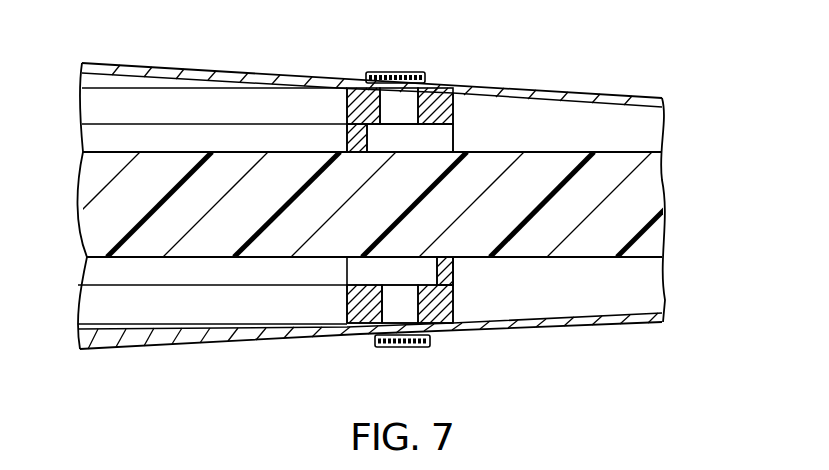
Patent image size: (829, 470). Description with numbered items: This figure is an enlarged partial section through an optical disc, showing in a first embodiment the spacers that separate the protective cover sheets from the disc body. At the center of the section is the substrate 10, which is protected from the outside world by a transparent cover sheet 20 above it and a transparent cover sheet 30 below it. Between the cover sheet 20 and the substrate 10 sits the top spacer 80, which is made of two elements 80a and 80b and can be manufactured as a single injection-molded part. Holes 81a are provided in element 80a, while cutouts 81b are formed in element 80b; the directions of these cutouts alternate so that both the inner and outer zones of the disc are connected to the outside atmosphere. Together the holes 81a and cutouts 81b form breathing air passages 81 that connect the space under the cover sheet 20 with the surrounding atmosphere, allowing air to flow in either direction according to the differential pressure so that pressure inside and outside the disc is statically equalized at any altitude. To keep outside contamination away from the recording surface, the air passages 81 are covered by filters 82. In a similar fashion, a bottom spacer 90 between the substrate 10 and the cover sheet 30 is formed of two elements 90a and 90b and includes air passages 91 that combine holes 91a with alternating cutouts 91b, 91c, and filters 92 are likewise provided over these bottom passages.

The substrate 10 is at (650, 203).
The cover sheet 20 is at (605, 93).
The cover sheet 30 is at (562, 328).
The top spacer 80 is at (470, 113).
The element 80a is at (347, 105).
The element 80b is at (347, 138).
The air passages 81 is at (402, 122).
The holes 81a is at (410, 100).
The cutout 81b is at (455, 133).
The filters 82 is at (372, 72).
The bottom spacer 90 is at (467, 314).
The element 90a is at (347, 307).
The element 90b is at (455, 297).
The air passages 91 is at (401, 298).
The holes 91a is at (372, 318).
The cutouts 91b is at (448, 281).
The cutout 91c is at (448, 281).
The filters 92 is at (412, 348).